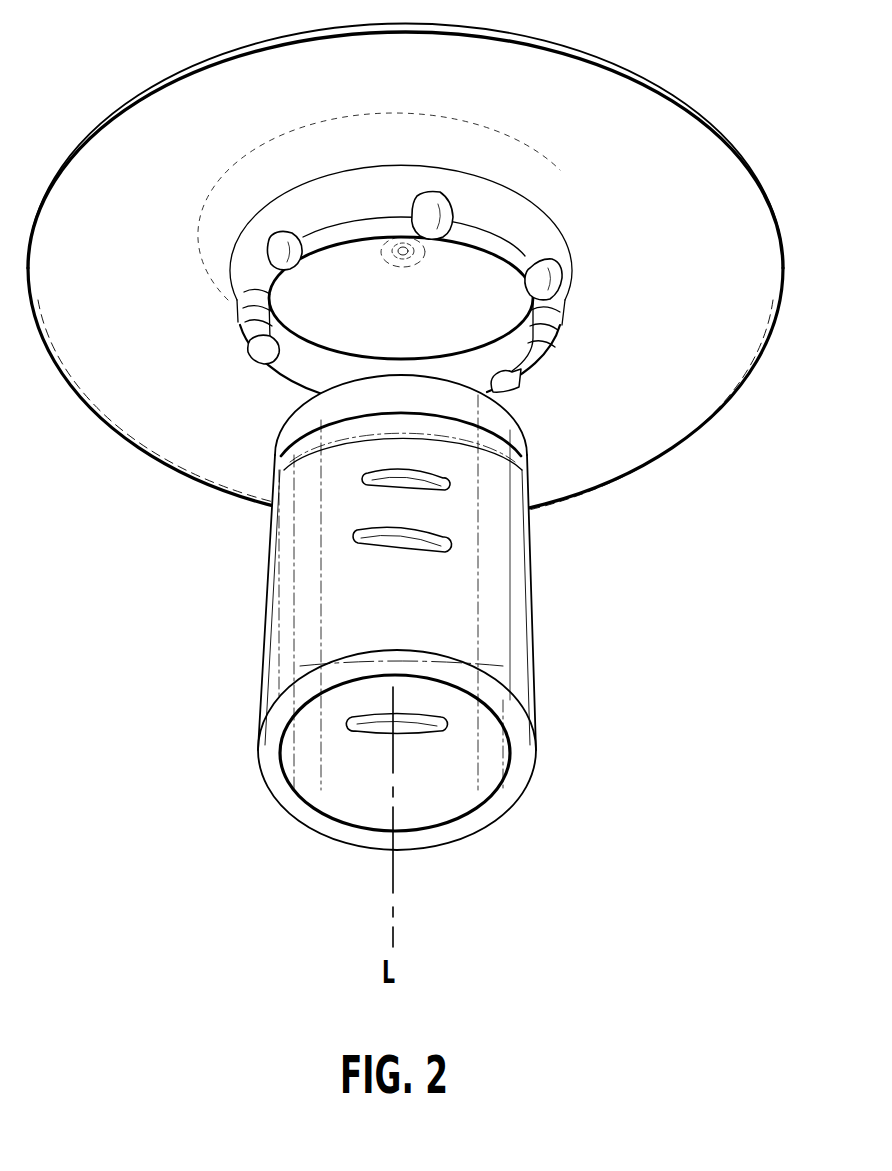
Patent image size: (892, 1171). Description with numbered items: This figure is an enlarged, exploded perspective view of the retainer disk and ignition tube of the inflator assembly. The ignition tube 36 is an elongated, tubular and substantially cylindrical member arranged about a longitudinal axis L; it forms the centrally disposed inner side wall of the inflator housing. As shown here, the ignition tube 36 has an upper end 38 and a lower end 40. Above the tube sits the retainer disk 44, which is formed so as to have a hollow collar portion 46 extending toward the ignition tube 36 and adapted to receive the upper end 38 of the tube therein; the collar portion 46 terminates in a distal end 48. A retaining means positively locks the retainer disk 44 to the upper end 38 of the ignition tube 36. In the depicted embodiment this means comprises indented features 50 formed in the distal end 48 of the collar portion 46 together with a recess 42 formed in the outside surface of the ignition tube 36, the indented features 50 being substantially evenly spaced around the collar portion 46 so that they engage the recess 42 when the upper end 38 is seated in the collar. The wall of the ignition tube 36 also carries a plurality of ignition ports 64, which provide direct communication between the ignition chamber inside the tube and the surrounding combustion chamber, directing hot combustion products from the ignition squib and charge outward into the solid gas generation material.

The ignition tube 36 is at (500, 633).
The upper end 38 is at (297, 428).
The lower end 40 is at (278, 677).
The recess 42 is at (495, 460).
The retainer disk 44 is at (618, 118).
The collar portion 46 is at (473, 197).
The distal end 48 is at (547, 360).
The indented features 50 is at (423, 207).
The ignition ports 64 is at (353, 533).